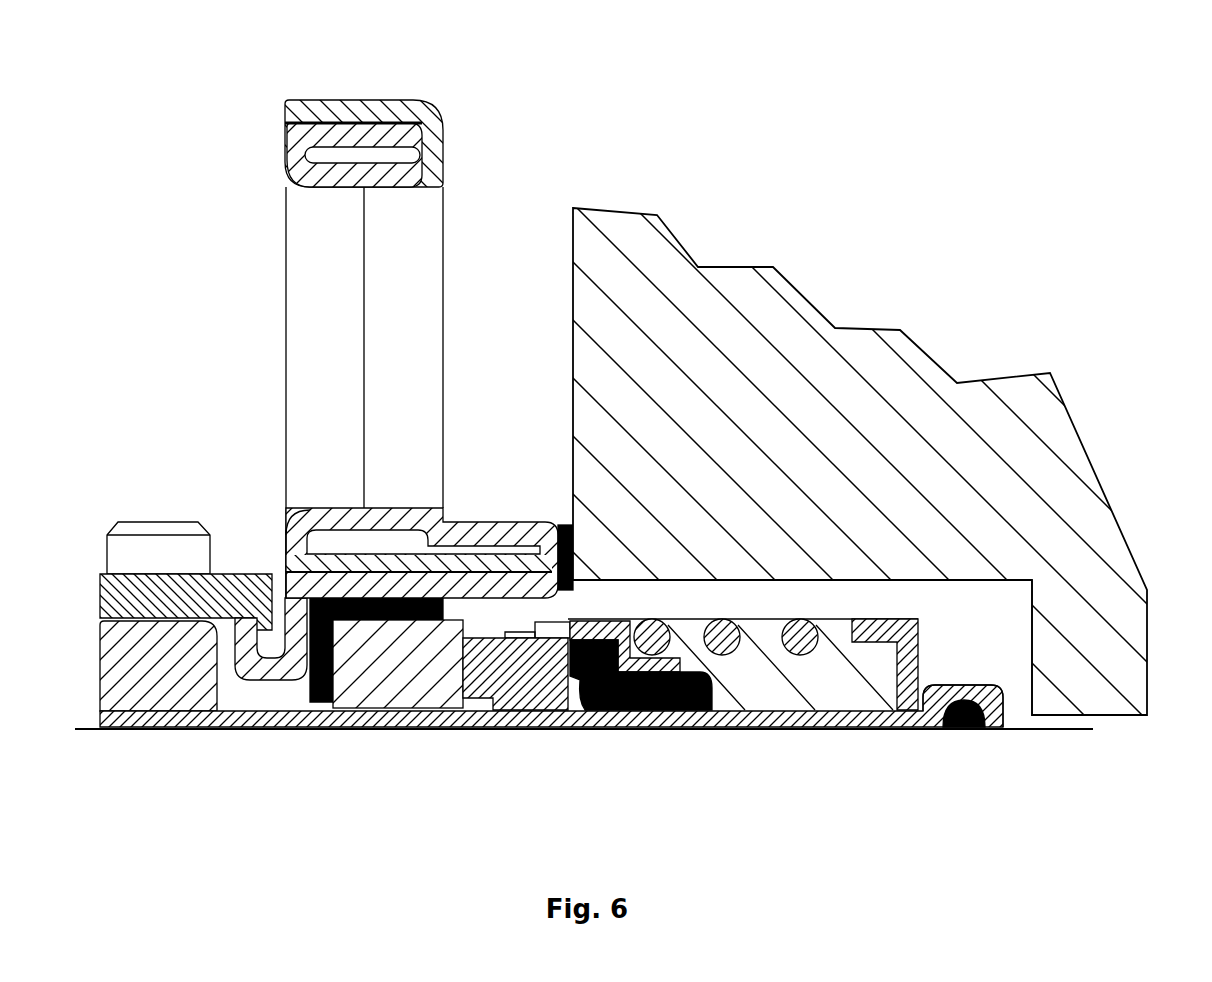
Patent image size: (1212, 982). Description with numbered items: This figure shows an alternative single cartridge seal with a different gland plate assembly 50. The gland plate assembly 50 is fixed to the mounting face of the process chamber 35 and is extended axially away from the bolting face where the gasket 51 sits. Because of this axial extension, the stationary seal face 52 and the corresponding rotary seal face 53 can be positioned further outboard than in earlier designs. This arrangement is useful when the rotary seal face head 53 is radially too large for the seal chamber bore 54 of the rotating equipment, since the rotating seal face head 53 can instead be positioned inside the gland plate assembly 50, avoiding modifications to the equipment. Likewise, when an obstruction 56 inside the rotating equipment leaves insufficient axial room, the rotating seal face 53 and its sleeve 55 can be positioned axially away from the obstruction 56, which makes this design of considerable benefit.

The gland plate assembly 50 is at (433, 90).
The process chamber 35 is at (575, 295).
The gasket 51 is at (562, 527).
The stationary seal face 52 is at (428, 683).
The rotary seal face 53 is at (517, 693).
The seal chamber bore 54 is at (952, 577).
The sleeve 55 is at (818, 729).
The obstruction 56 is at (1037, 632).